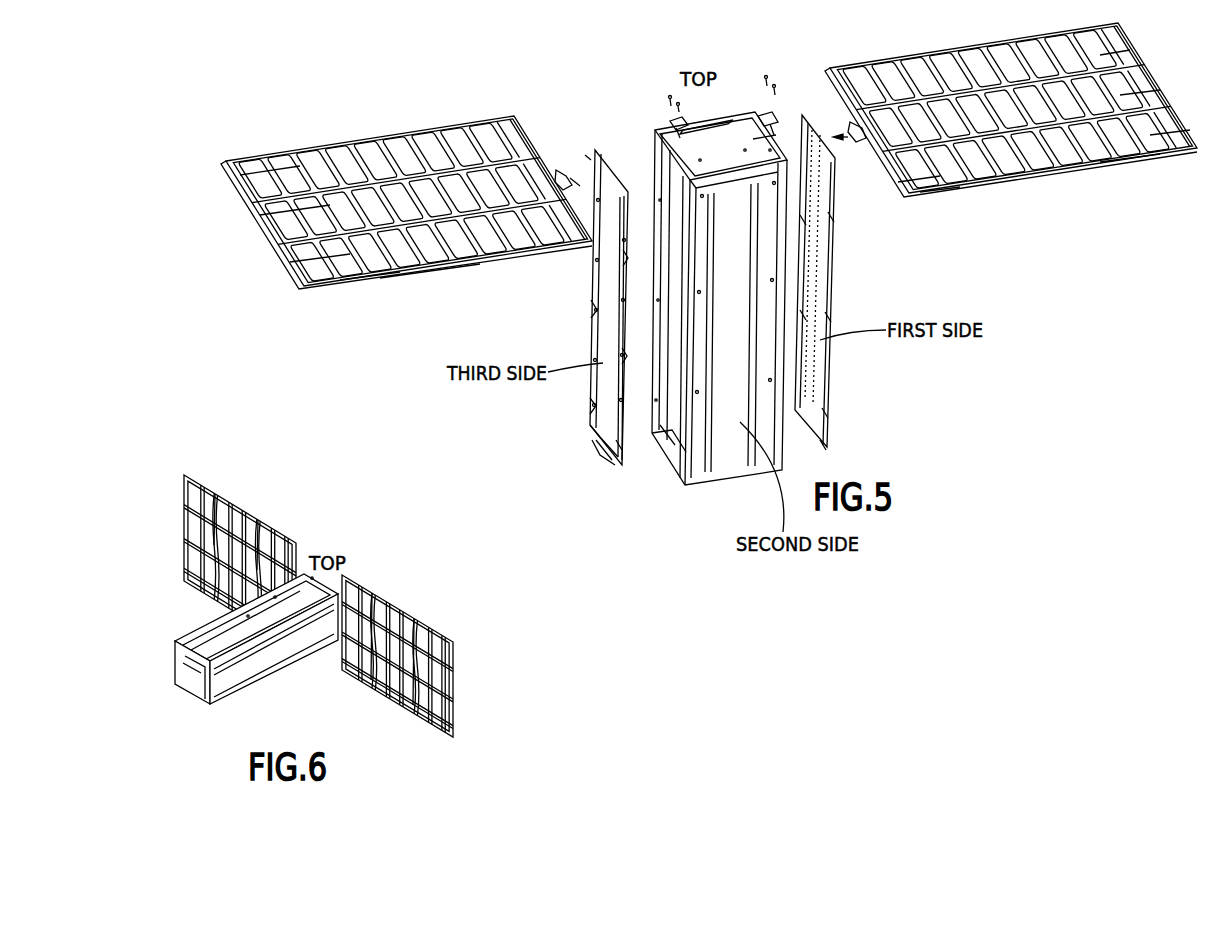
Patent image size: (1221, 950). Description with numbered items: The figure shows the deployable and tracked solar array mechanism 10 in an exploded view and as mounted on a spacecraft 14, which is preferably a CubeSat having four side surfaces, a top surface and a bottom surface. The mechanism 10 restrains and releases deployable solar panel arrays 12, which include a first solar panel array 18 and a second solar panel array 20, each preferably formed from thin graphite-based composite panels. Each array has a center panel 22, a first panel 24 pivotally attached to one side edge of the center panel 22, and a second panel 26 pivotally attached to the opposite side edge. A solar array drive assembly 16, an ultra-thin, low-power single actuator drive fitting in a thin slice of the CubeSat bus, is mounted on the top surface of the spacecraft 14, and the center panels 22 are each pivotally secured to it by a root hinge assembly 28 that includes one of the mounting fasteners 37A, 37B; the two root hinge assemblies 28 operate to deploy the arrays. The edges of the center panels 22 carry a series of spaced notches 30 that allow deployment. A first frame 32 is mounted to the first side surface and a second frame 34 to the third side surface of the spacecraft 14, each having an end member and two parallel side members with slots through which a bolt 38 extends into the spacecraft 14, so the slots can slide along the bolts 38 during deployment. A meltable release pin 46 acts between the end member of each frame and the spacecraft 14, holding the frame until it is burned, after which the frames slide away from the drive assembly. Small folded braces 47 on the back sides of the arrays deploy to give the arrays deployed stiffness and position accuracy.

In FIG. 5, the deployable and tracked solar array mechanism 10 is at (902, 373).
In FIG. 6, the deployable and tracked solar array mechanism 10 is at (375, 545).
In FIG. 5, the solar panel arrays 12 is at (460, 276).
In FIG. 6, the solar panel arrays 12 is at (373, 700).
In FIG. 5, the spacecraft 14 is at (752, 500).
In FIG. 6, the spacecraft 14 is at (196, 686).
In FIG. 5, the solar array drive assembly 16 is at (703, 140).
In FIG. 5, the first solar panel array 18 is at (898, 184).
In FIG. 5, the second solar panel array 20 is at (371, 276).
In FIG. 5, the center panel 22 is at (283, 217).
In FIG. 5, the first panel 24 is at (305, 265).
In FIG. 5, the second panel 26 is at (252, 160).
In FIG. 5, the root hinge assembly 28 is at (560, 175).
In FIG. 5, the notches 30 is at (387, 279).
In FIG. 5, the first frame 32 is at (838, 383).
In FIG. 5, the second frame 34 is at (617, 432).
In FIG. 5, the mounting fastener 37A is at (650, 100).
In FIG. 5, the mounting fastener 37B is at (748, 82).
In FIG. 5, the bolt 38 is at (590, 160).
In FIG. 5, the meltable release pin 46 is at (598, 458).
In FIG. 6, the folded braces 47 is at (225, 512).